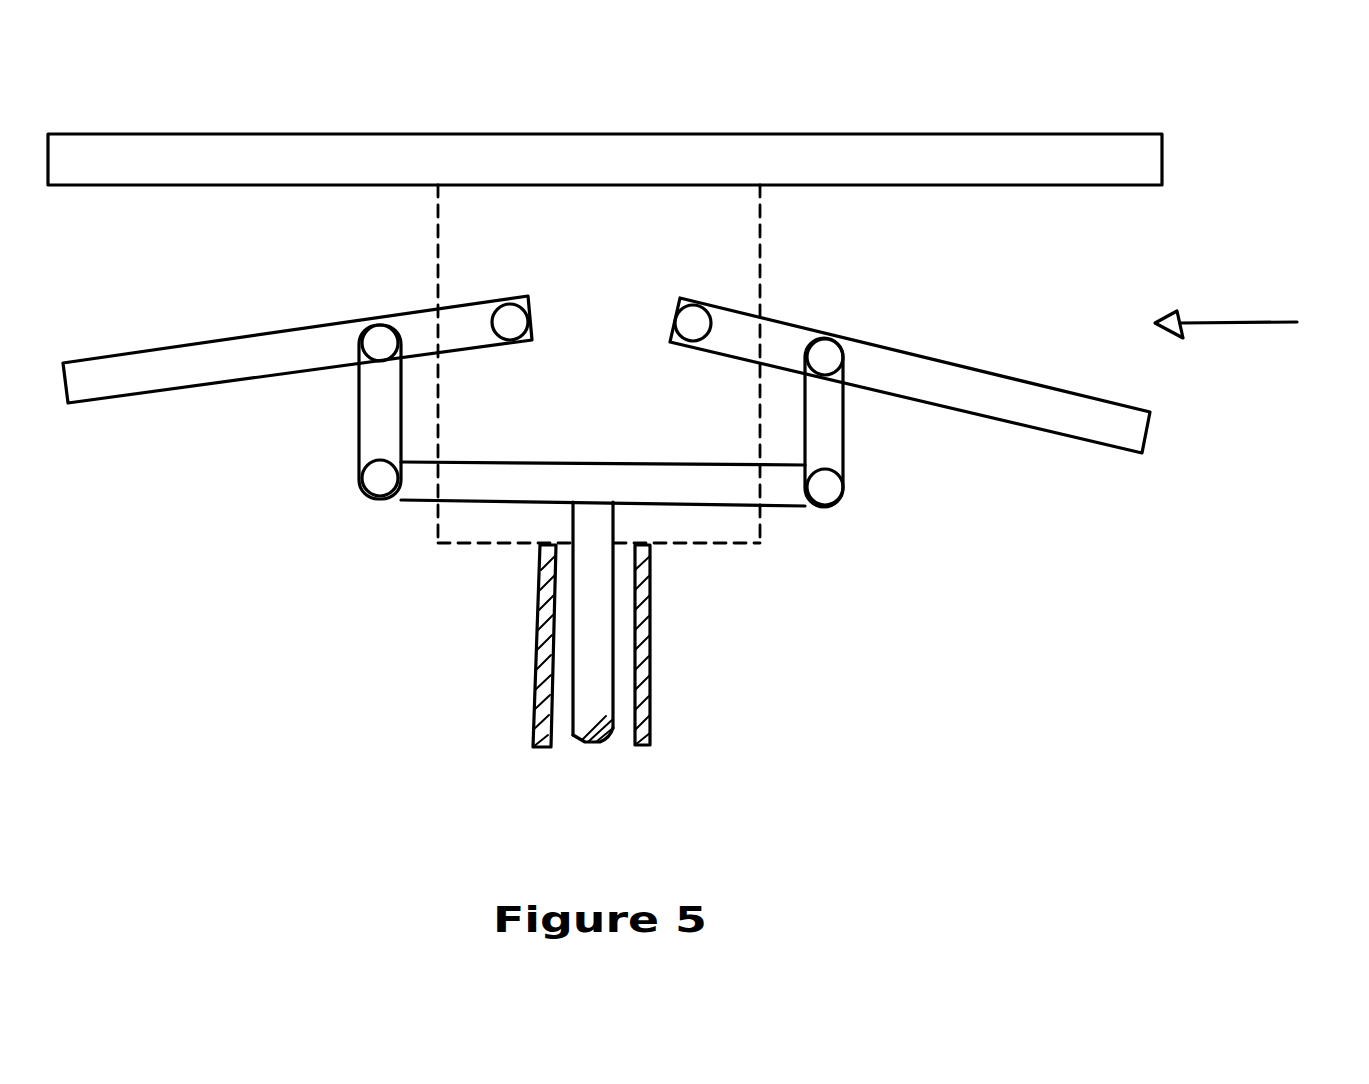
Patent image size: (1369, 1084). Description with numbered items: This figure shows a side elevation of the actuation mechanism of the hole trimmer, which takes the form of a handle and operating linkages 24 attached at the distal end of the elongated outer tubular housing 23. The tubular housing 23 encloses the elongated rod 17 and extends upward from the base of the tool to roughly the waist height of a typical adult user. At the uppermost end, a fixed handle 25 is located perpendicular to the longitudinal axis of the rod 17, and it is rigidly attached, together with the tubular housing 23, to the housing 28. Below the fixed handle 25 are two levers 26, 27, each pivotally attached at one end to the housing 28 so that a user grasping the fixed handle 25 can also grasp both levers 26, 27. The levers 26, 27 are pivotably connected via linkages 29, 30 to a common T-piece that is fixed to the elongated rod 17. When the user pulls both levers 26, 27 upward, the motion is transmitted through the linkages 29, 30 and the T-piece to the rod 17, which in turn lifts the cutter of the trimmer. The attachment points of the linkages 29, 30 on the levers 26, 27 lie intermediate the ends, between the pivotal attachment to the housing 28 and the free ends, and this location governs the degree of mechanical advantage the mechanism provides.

The elongated rod 17 is at (565, 648).
The elongated outer tubular housing 23 is at (538, 592).
The handle and operating linkages 24 is at (1254, 317).
The fixed handle 25 is at (390, 133).
The lever 26 is at (187, 392).
The lever 27 is at (1025, 428).
The housing 28 is at (357, 435).
The linkage 29 is at (845, 450).
The linkage 30 is at (588, 460).